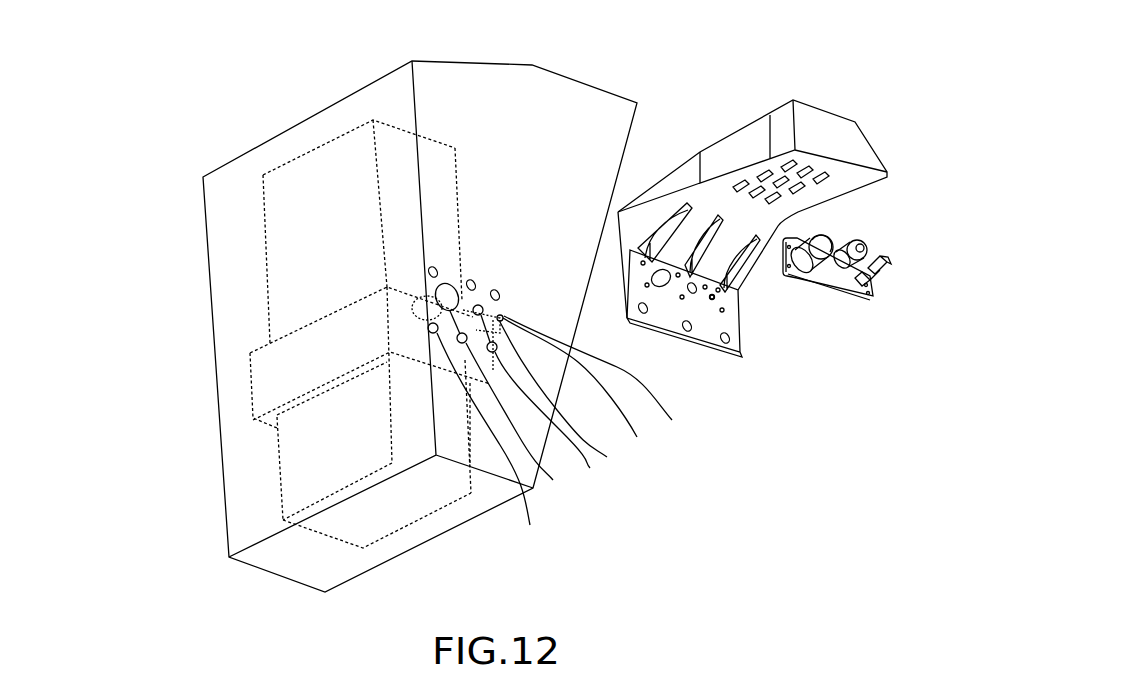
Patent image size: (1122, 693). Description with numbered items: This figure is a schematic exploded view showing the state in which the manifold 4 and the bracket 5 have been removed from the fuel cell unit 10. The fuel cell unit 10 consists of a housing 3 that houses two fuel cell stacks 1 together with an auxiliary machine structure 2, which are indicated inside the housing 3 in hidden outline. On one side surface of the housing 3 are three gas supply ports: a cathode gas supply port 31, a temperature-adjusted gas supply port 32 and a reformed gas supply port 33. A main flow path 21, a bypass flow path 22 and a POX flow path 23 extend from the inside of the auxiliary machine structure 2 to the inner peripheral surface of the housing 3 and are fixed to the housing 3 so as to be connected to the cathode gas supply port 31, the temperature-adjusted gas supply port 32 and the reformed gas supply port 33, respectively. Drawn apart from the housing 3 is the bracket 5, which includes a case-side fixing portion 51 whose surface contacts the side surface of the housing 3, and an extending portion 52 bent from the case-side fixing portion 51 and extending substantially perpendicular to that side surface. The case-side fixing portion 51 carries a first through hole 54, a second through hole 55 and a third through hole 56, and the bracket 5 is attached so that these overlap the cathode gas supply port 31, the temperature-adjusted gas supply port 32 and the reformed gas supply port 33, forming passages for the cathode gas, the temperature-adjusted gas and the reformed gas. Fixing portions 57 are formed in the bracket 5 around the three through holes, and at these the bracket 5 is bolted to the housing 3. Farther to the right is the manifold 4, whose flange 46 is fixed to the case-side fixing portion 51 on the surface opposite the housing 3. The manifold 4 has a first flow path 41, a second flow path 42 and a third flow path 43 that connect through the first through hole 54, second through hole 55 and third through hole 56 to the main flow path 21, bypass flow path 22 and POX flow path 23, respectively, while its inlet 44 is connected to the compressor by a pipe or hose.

The fuel cell unit 10 is at (121, 205).
The fuel cell stack 1 is at (265, 247).
The auxiliary machine structure 2 is at (247, 373).
The housing 3 is at (212, 332).
The main flow path 21 is at (479, 406).
The bypass flow path 22 is at (538, 401).
The POX flow path 23 is at (548, 396).
The cathode gas supply port 31 is at (514, 422).
The temperature-adjusted gas supply port 32 is at (585, 392).
The reformed gas supply port 33 is at (601, 381).
The bracket 5 is at (850, 92).
The case-side fixing portion 51 is at (735, 318).
The extending portion 52 is at (747, 118).
The first through hole 54 is at (660, 280).
The second through hole 55 is at (692, 292).
The third through hole 56 is at (712, 300).
The fixing portion 57 is at (643, 312).
The manifold 4 is at (885, 297).
The first flow path 41 is at (803, 266).
The second flow path 42 is at (838, 272).
The third flow path 43 is at (860, 297).
The inlet 44 is at (828, 247).
The flange 46 is at (870, 288).